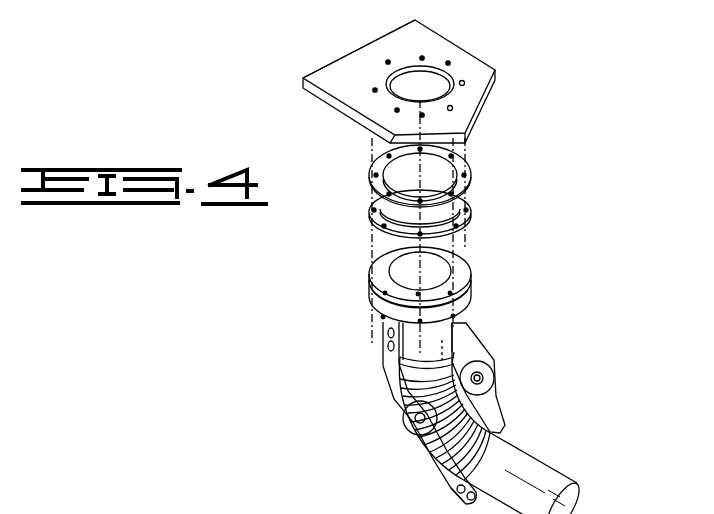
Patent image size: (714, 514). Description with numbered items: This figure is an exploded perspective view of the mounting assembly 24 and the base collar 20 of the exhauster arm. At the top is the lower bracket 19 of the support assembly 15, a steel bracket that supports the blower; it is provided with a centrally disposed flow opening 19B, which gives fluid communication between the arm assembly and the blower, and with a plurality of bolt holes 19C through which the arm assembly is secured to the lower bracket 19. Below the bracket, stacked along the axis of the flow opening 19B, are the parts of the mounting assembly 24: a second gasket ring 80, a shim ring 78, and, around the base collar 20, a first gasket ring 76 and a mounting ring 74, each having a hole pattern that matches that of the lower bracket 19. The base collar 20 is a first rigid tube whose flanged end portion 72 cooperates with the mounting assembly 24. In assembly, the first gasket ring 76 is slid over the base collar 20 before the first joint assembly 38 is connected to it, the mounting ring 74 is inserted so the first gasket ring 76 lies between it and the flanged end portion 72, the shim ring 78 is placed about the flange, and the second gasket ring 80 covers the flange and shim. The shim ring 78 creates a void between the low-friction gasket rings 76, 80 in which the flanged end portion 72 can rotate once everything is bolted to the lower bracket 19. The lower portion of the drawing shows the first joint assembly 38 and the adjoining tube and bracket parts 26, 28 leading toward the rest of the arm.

The support assembly 15 is at (355, 48).
The lower bracket 19 is at (448, 40).
The flow opening 19B is at (423, 93).
The bolt holes 19C is at (453, 106).
The second gasket ring 80 is at (470, 172).
The shim ring 78 is at (466, 212).
The mounting assembly 24 is at (353, 219).
The first gasket ring 76 is at (419, 297).
The flanged end portion 72 is at (455, 273).
The mounting ring 74 is at (370, 311).
The base collar 20 is at (455, 325).
The conduit pipe 26 is at (540, 458).
The first joint assembly 38 is at (424, 431).
The strap end bracket 28 is at (433, 501).